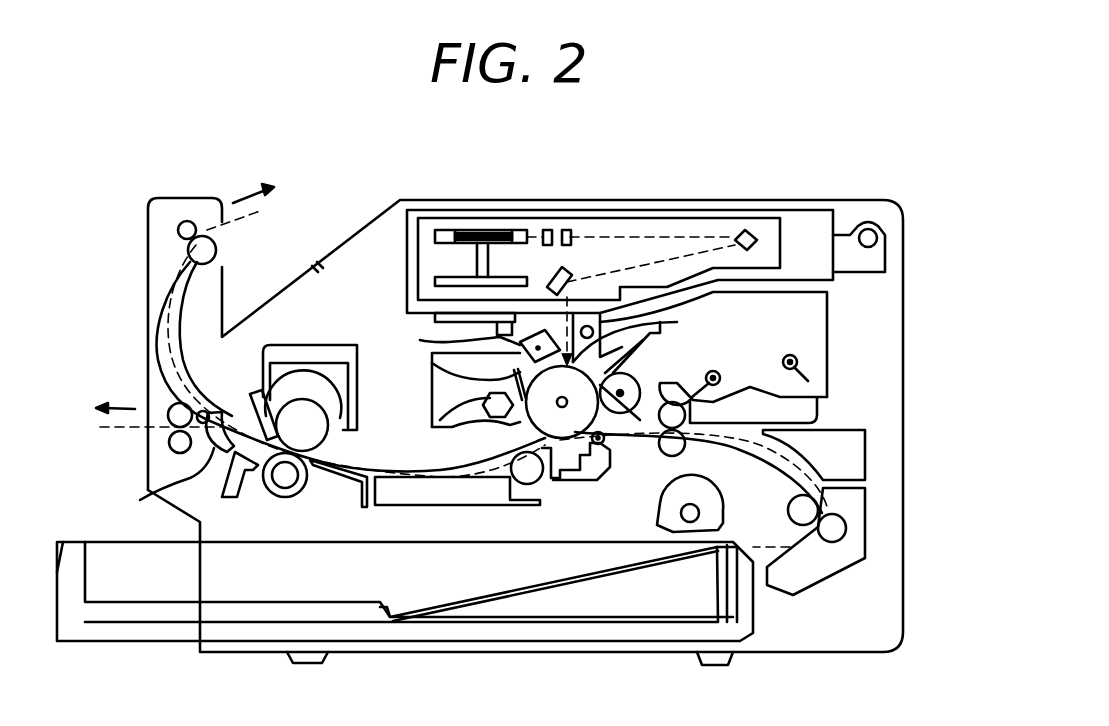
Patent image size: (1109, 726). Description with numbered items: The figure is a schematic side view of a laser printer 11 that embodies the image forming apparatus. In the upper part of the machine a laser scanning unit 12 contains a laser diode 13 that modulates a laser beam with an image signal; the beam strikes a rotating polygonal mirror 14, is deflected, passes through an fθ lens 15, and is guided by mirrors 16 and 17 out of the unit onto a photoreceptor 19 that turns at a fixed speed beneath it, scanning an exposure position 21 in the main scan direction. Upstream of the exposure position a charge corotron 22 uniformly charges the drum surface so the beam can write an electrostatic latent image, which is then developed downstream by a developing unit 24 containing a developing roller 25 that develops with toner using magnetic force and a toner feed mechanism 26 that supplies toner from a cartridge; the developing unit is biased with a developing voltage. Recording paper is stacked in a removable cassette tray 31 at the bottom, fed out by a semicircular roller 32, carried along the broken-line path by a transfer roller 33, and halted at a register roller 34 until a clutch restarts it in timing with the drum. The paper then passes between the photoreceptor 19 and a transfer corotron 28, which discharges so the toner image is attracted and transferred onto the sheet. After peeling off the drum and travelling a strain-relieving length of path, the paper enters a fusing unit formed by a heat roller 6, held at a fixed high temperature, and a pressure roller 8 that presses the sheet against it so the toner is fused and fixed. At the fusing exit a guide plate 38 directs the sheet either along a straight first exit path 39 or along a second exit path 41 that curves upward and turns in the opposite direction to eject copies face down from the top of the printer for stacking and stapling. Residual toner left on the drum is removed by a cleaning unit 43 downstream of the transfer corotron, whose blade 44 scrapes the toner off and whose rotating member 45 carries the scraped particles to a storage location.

The heat roller 6 is at (303, 393).
The pressure roller 8 is at (296, 494).
The laser printer 11 is at (828, 200).
The laser scanning unit 12 is at (665, 218).
The laser diode 13 is at (547, 230).
The polygonal mirror 14 is at (480, 230).
The fθ lens 15 is at (565, 230).
The mirror 16 is at (745, 232).
The mirror 17 is at (570, 270).
The photoreceptor 19 is at (525, 428).
The exposure position 21 is at (665, 320).
The charge corotron 22 is at (515, 346).
The developing unit 24 is at (820, 320).
The developing roller 25 is at (638, 385).
The toner feed mechanism 26 is at (722, 372).
The transfer corotron 28 is at (582, 482).
The cassette tray 31 is at (152, 588).
The semicircular roller 32 is at (665, 495).
The transfer roller 33 is at (795, 510).
The register roller 34 is at (686, 446).
The guide plate 38 is at (159, 374).
The first exit path 39 is at (120, 405).
The second exit path 41 is at (250, 195).
The cleaning unit 43 is at (432, 395).
The blade 44 is at (440, 372).
The rotating member 45 is at (484, 406).